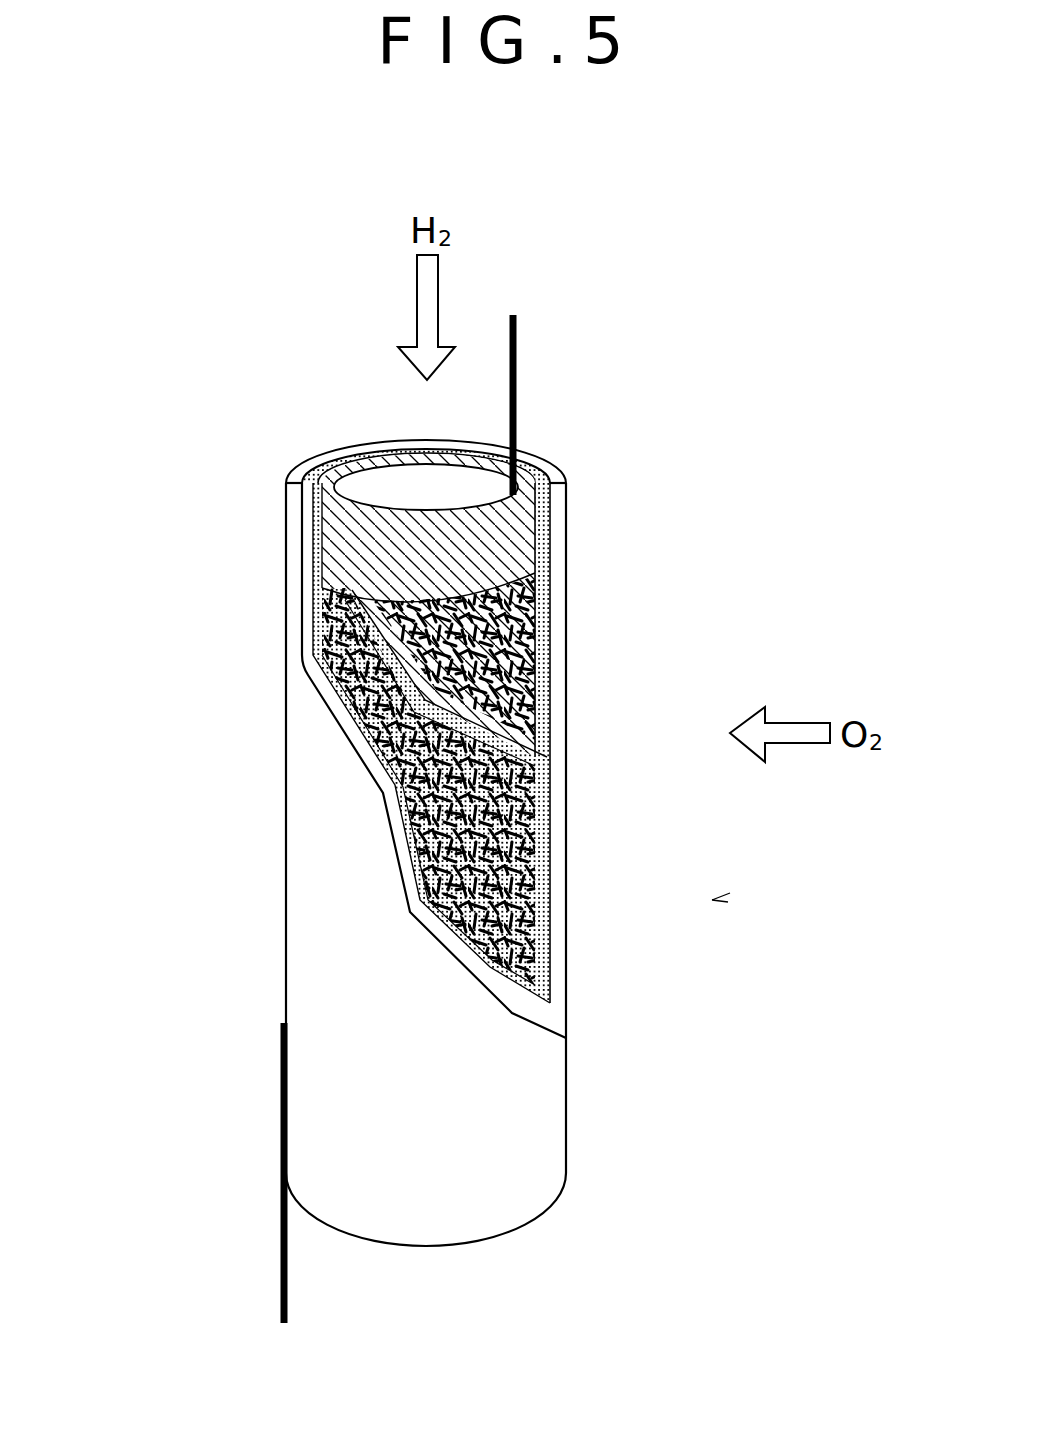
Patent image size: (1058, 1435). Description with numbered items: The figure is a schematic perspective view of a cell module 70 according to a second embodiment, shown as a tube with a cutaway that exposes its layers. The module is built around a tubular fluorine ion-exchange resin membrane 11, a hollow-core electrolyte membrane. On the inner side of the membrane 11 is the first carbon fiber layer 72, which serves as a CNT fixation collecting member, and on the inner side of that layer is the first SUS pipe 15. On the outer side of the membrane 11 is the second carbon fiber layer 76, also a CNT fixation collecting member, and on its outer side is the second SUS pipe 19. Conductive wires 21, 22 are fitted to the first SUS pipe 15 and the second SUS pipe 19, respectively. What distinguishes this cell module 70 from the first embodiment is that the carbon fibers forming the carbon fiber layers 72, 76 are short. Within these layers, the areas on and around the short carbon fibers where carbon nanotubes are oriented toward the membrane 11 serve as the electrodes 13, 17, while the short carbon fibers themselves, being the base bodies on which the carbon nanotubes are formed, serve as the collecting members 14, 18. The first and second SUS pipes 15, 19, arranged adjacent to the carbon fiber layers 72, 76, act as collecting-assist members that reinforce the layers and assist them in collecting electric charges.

The tubular fluorine ion-exchange resin membrane 11 is at (315, 478).
The electrode 13 is at (570, 625).
The collecting member 14 is at (555, 766).
The first SUS pipe 15 is at (503, 563).
The electrode 17 is at (330, 660).
The collecting member 18 is at (317, 683).
The second SUS pipe 19 is at (320, 780).
The conductive wire 21 is at (517, 382).
The conductive wire 22 is at (284, 1212).
The cell module 70 is at (712, 900).
The first carbon fiber layer 72 is at (445, 600).
The second carbon fiber layer 76 is at (322, 642).